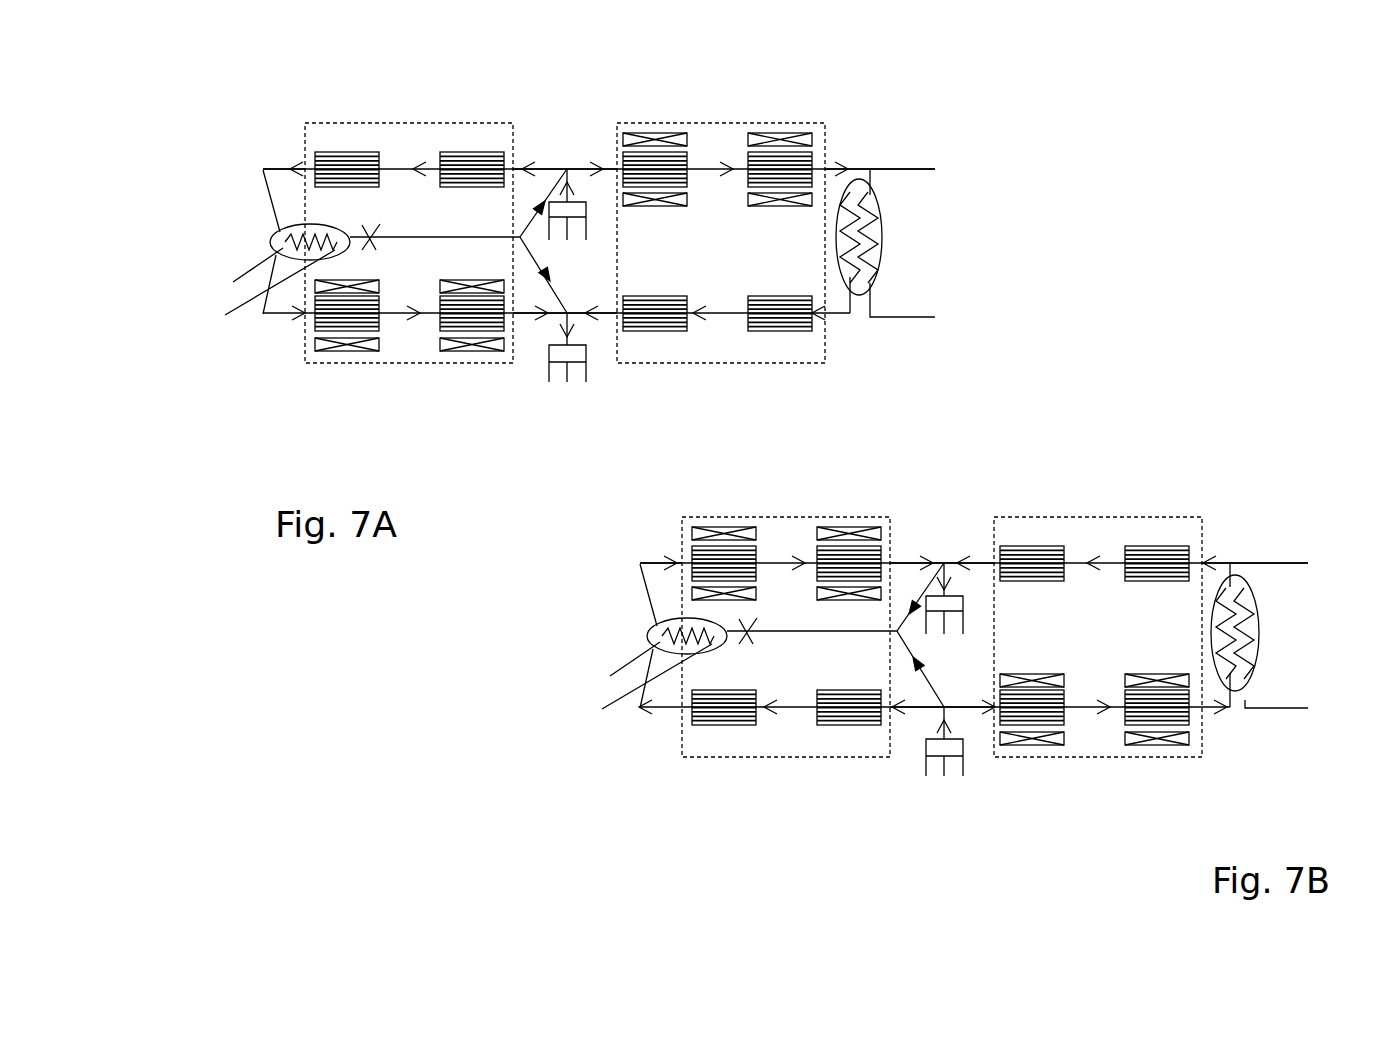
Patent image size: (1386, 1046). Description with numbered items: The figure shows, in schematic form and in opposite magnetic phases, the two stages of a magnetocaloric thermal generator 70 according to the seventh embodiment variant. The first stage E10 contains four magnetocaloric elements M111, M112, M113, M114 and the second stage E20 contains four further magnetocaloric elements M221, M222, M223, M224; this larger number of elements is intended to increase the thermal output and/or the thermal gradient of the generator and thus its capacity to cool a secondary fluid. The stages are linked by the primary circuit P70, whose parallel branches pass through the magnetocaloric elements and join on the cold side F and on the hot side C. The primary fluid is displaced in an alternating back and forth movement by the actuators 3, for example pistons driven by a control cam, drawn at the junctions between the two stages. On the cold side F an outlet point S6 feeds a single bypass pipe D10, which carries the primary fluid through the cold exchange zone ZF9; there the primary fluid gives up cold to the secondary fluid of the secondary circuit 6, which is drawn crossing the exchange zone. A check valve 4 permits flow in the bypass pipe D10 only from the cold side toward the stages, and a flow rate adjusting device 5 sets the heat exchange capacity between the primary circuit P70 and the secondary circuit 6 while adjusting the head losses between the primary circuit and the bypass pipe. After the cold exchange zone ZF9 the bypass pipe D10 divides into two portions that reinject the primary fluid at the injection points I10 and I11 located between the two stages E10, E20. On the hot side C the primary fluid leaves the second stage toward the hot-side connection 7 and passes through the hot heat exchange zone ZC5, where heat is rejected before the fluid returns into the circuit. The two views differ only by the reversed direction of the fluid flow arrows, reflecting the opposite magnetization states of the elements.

In FIG. 7A, the magnetocaloric thermal generator 70 is at (1100, 148).
In FIG. 7A, the cold side F is at (262, 179).
In FIG. 7B, the cold side F is at (633, 532).
In FIG. 7A, the cold exchange zone ZF9 is at (281, 233).
In FIG. 7B, the cold exchange zone ZF9 is at (610, 635).
In FIG. 7A, the outlet point S6 is at (273, 243).
In FIG. 7B, the outlet point S6 is at (648, 636).
In FIG. 7A, the secondary circuit 6 is at (250, 302).
In FIG. 7B, the secondary circuit 6 is at (651, 702).
In FIG. 7A, the flow rate adjusting device 5 is at (378, 222).
In FIG. 7B, the flow rate adjusting device 5 is at (781, 621).
In FIG. 7A, the check valve 4 is at (530, 168).
In FIG. 7B, the check valve 4 is at (909, 534).
In FIG. 7A, the actuators 3 is at (562, 217).
In FIG. 7B, the actuators 3 is at (936, 712).
In FIG. 7A, the primary circuit P70 is at (547, 167).
In FIG. 7B, the primary circuit P70 is at (949, 537).
In FIG. 7A, the injection point I10 is at (568, 168).
In FIG. 7B, the injection point I10 is at (952, 524).
In FIG. 7A, the injection point I11 is at (568, 313).
In FIG. 7B, the injection point I11 is at (950, 693).
In FIG. 7A, the bypass pipe D10 is at (499, 237).
In FIG. 7B, the bypass pipe D10 is at (860, 708).
In FIG. 7A, the magnetocaloric element M111 is at (323, 162).
In FIG. 7B, the magnetocaloric element M111 is at (737, 540).
In FIG. 7A, the magnetocaloric element M112 is at (330, 332).
In FIG. 7B, the magnetocaloric element M112 is at (721, 749).
In FIG. 7A, the magnetocaloric element M113 is at (453, 162).
In FIG. 7B, the magnetocaloric element M113 is at (862, 540).
In FIG. 7A, the magnetocaloric element M114 is at (467, 333).
In FIG. 7B, the magnetocaloric element M114 is at (861, 749).
In FIG. 7A, the magnetocaloric element M221 is at (635, 163).
In FIG. 7B, the magnetocaloric element M221 is at (1046, 529).
In FIG. 7A, the magnetocaloric element M222 is at (642, 333).
In FIG. 7B, the magnetocaloric element M222 is at (1031, 741).
In FIG. 7A, the magnetocaloric element M223 is at (767, 163).
In FIG. 7B, the magnetocaloric element M223 is at (1174, 529).
In FIG. 7A, the magnetocaloric element M224 is at (775, 333).
In FIG. 7B, the magnetocaloric element M224 is at (1170, 741).
In FIG. 7A, the first stage E10 is at (440, 363).
In FIG. 7B, the first stage E10 is at (786, 680).
In FIG. 7A, the second stage E20 is at (752, 363).
In FIG. 7B, the second stage E20 is at (1098, 680).
In FIG. 7A, the hot side C is at (858, 170).
In FIG. 7B, the hot side C is at (1268, 531).
In FIG. 7A, the hot side line 7 is at (925, 170).
In FIG. 7B, the hot side line 7 is at (1300, 617).
In FIG. 7A, the hot heat exchange zone ZC5 is at (882, 250).
In FIG. 7B, the hot heat exchange zone ZC5 is at (1287, 635).